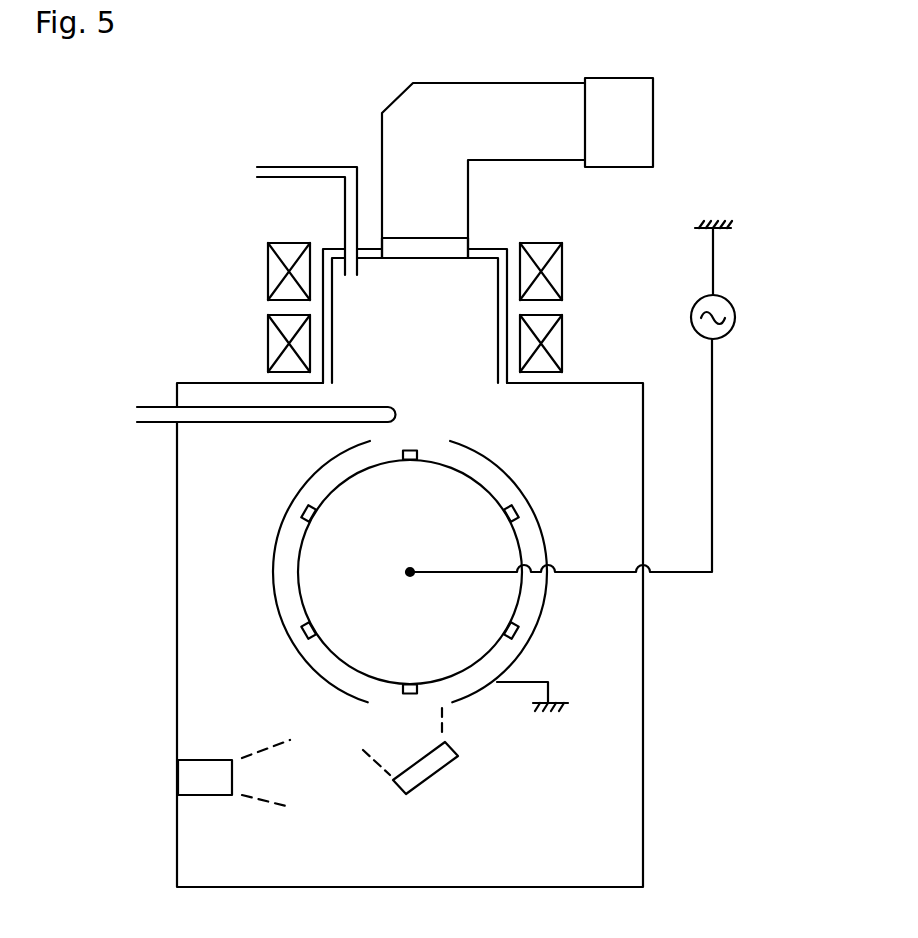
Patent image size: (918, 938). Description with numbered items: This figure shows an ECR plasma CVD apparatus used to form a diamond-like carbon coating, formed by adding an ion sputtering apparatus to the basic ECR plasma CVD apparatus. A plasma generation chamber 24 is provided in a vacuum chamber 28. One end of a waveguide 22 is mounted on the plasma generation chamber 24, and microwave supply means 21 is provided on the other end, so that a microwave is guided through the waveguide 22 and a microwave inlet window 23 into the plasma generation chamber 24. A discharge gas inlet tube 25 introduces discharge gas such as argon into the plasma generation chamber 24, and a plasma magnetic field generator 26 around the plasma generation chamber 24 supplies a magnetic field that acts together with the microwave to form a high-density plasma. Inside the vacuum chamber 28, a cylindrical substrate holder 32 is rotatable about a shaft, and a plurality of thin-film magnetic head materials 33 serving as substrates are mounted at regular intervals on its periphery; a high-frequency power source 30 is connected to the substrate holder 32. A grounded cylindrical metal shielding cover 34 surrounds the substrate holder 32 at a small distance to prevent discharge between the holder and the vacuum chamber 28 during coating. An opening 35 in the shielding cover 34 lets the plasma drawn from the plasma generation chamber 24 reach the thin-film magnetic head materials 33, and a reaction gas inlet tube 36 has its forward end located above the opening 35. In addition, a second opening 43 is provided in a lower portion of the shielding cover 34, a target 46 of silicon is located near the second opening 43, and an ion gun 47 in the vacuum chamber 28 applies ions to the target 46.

The microwave supply means 21 is at (635, 125).
The waveguide 22 is at (517, 100).
The microwave inlet window 23 is at (443, 245).
The plasma generation chamber 24 is at (473, 277).
The discharge gas inlet tube 25 is at (293, 163).
The plasma magnetic field generator 26 is at (563, 273).
The vacuum chamber 28 is at (195, 635).
The high-frequency power source 30 is at (737, 313).
The cylindrical substrate holder 32 is at (520, 552).
The thin-film magnetic head materials 33 is at (515, 510).
The cylindrical shielding cover 34 is at (545, 607).
The opening 35 is at (417, 447).
The reaction gas inlet tube 36 is at (155, 405).
The second opening 43 is at (453, 705).
The target 46 is at (433, 777).
The ion gun 47 is at (207, 787).